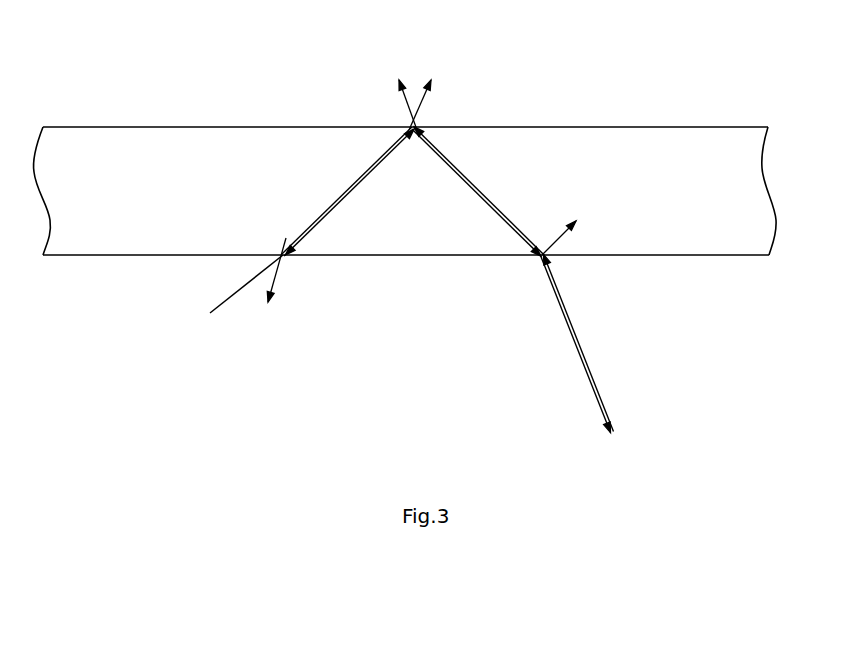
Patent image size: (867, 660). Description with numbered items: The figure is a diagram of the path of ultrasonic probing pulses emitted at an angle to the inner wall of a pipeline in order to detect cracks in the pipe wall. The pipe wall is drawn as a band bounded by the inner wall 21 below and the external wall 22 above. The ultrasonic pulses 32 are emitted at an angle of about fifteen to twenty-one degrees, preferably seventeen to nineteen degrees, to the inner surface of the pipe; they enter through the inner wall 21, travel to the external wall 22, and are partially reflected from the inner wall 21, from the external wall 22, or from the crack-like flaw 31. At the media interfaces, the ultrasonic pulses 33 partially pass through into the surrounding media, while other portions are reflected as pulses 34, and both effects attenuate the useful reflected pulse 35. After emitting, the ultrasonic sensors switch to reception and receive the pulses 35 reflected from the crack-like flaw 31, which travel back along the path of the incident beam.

The inner wall 21 is at (362, 256).
The external wall 22 is at (473, 127).
The crack-like flaw 31 is at (300, 233).
The ultrasonic pulses 32 is at (593, 342).
The ultrasonic pulses 33 is at (341, 195).
The reflected pulses 34 is at (574, 225).
The reflected pulse 35 is at (576, 343).